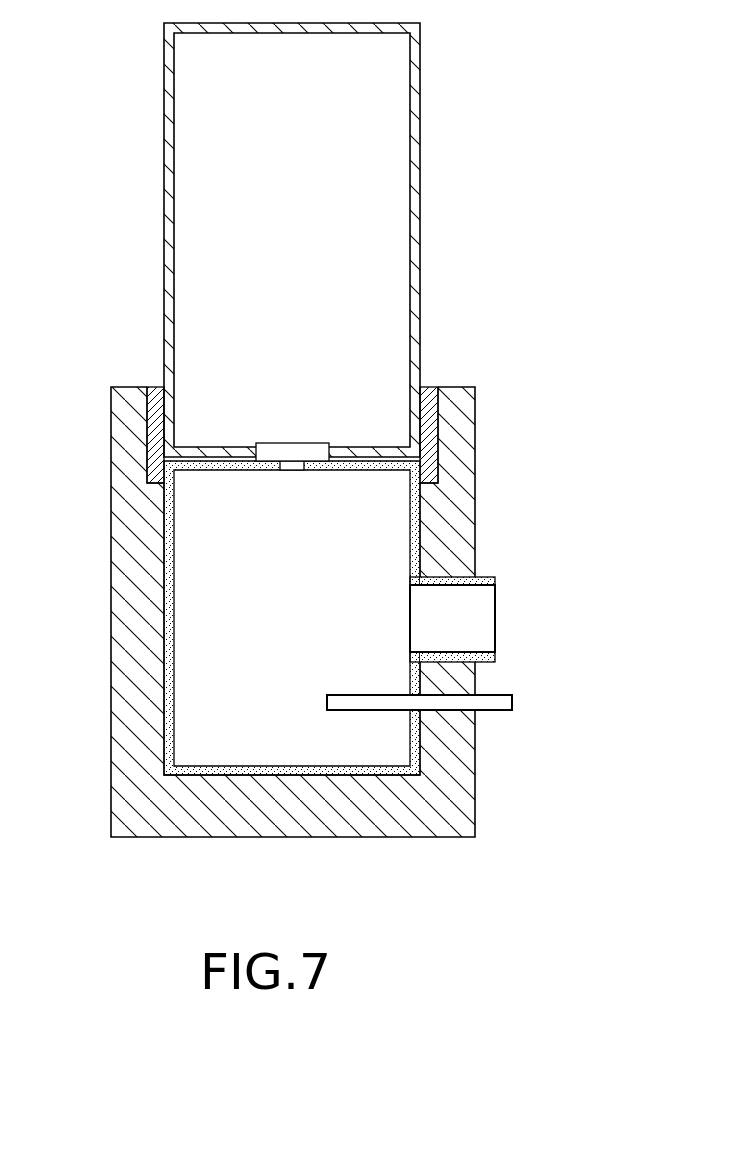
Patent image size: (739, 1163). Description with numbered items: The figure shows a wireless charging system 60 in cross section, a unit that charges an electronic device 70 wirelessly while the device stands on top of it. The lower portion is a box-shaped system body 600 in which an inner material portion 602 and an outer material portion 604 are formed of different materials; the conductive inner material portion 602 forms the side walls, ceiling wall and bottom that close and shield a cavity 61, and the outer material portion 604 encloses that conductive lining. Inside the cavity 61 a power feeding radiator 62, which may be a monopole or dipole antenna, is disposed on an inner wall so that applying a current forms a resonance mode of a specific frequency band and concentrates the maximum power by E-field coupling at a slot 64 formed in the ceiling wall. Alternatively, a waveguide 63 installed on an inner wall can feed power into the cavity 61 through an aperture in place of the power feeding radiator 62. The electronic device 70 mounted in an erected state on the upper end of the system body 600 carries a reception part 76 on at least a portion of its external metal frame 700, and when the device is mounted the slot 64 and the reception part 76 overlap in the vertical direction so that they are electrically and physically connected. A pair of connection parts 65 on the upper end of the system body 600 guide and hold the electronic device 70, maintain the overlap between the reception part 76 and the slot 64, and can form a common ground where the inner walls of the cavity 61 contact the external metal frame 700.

The wireless charging system 60 is at (327, 430).
The system body 600 is at (319, 570).
The outer material portion 604 is at (140, 727).
The inner material portion 602 is at (170, 678).
The cavity 61 is at (194, 633).
The power feeding radiator 62 is at (505, 694).
The waveguide 63 is at (485, 583).
The slot 64 is at (290, 470).
The connection part 65 is at (428, 387).
The electronic device 70 is at (351, 242).
The external metal frame 700 is at (413, 226).
The reception part 76 is at (297, 424).